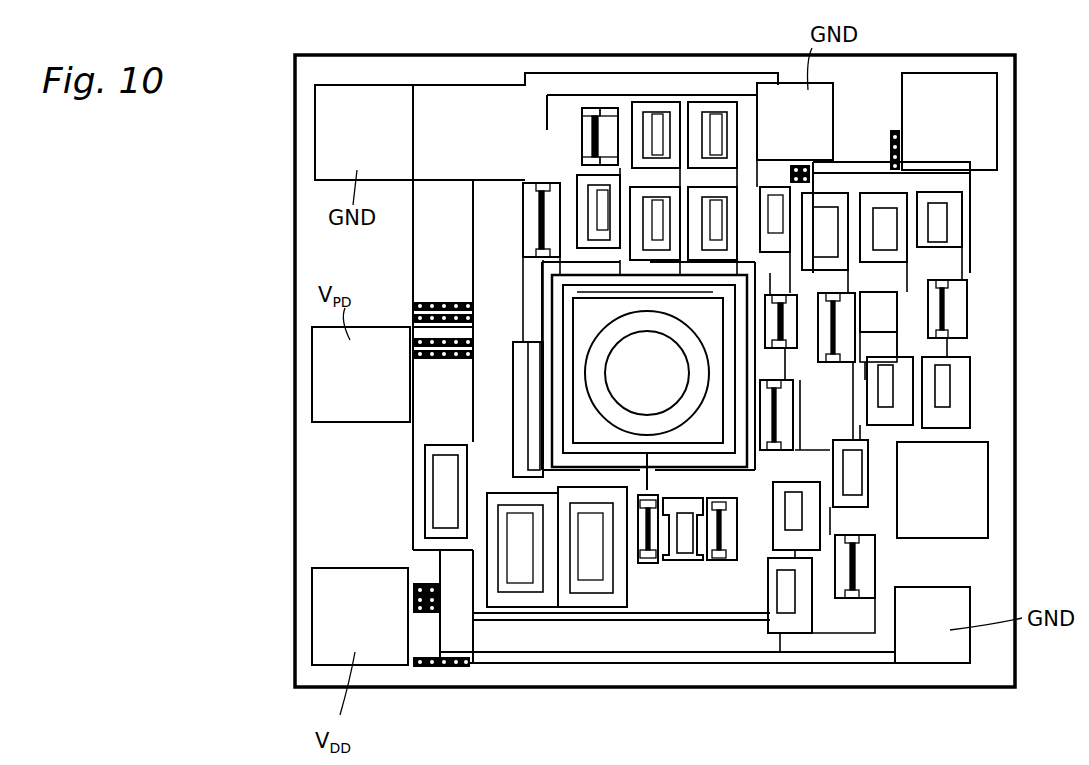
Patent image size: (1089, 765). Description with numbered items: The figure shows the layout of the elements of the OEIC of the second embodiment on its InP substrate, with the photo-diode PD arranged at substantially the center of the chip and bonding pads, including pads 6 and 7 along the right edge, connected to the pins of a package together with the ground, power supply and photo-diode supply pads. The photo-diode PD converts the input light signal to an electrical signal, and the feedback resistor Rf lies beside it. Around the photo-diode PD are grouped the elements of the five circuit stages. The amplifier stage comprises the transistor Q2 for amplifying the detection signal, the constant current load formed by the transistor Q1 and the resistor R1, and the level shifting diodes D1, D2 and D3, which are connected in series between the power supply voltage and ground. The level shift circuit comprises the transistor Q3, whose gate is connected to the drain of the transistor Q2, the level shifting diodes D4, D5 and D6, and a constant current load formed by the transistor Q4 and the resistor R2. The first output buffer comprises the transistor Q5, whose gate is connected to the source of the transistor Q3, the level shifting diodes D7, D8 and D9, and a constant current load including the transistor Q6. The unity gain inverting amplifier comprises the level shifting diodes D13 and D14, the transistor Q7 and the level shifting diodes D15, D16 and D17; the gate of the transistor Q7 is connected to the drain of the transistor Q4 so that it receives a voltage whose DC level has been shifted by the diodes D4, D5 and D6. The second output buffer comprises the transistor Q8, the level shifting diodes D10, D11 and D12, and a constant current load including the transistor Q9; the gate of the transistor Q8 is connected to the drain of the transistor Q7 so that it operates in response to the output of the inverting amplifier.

The bonding pad 6 is at (978, 118).
The bonding pad 7 is at (978, 470).
The photo-diode PD is at (628, 352).
The feedback resistor Rf is at (515, 385).
The resistor R1 is at (683, 538).
The resistor R2 is at (953, 300).
The transistor Q1 is at (718, 548).
The transistor Q2 is at (650, 555).
The transistor Q3 is at (787, 420).
The transistor Q4 is at (532, 237).
The transistor Q5 is at (790, 318).
The transistor Q6 is at (596, 110).
The transistor Q7 is at (842, 338).
The transistor Q8 is at (868, 563).
The transistor Q9 is at (883, 317).
The level shifting diode D1 is at (585, 567).
The level shifting diode D2 is at (520, 577).
The level shifting diode D3 is at (440, 500).
The level shifting diode D4 is at (655, 210).
The level shifting diode D5 is at (712, 205).
The level shifting diode D6 is at (600, 213).
The level shifting diode D7 is at (778, 212).
The level shifting diode D8 is at (715, 118).
The level shifting diode D9 is at (657, 118).
The level shifting diode D10 is at (855, 483).
The level shifting diode D11 is at (890, 388).
The level shifting diode D12 is at (947, 402).
The level shifting diode D13 is at (785, 605).
The level shifting diode D14 is at (790, 510).
The level shifting diode D15 is at (827, 247).
The level shifting diode D16 is at (883, 232).
The level shifting diode D17 is at (940, 215).